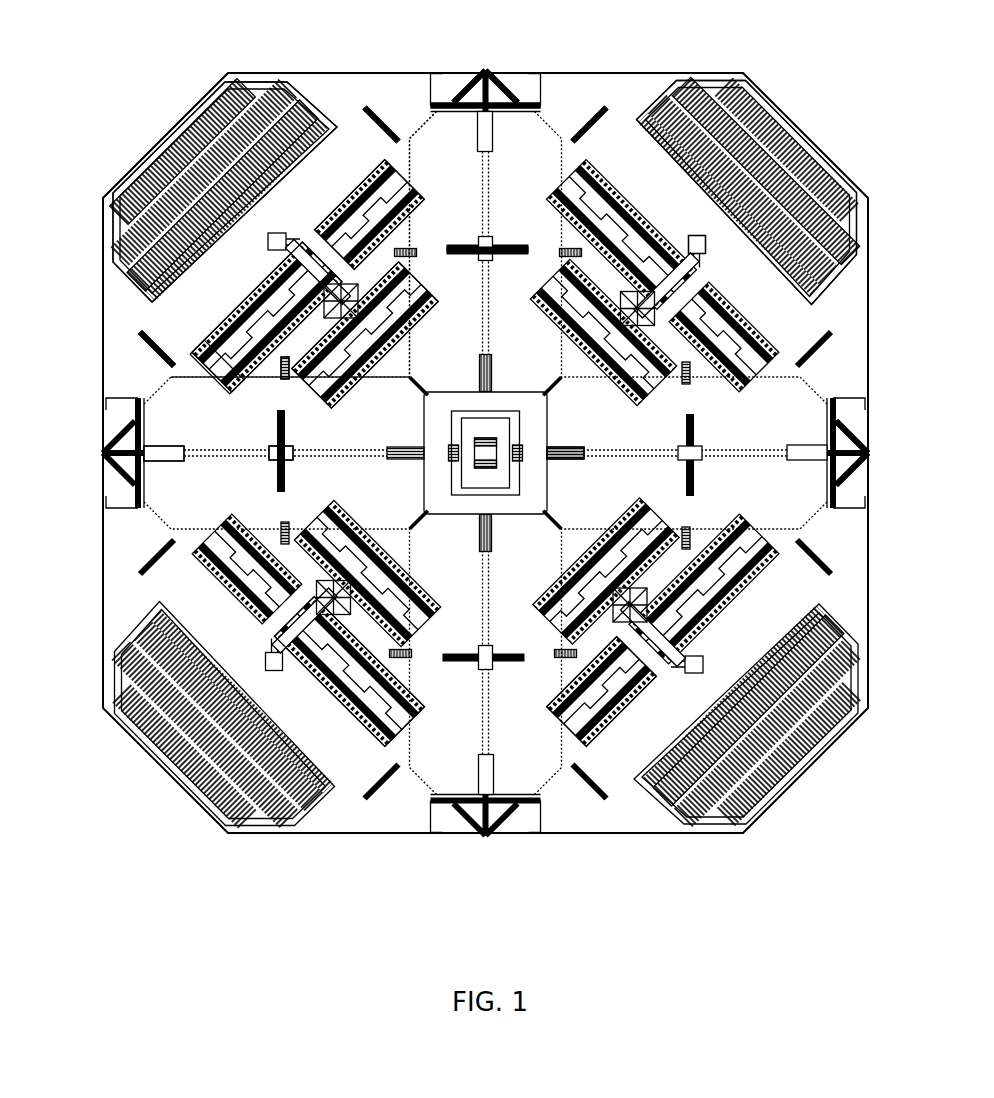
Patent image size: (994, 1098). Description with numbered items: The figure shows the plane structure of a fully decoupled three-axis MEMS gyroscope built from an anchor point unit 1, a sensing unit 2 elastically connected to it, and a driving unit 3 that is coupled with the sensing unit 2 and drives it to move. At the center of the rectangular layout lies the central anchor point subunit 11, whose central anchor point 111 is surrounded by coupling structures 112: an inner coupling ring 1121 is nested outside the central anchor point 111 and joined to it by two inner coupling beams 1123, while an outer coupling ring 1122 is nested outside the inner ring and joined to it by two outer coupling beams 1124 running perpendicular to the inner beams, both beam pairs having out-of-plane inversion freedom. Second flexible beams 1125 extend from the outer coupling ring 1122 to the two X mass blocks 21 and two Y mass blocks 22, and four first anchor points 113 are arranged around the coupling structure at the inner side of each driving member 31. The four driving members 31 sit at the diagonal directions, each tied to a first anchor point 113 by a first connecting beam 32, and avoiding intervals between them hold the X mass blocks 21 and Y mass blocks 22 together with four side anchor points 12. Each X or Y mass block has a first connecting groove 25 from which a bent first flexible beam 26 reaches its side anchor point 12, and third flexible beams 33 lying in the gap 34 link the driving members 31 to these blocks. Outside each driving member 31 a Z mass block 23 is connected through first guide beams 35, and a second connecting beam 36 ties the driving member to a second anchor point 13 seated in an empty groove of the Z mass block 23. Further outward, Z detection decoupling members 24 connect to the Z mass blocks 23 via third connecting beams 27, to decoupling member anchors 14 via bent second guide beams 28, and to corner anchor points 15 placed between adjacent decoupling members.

The anchor point unit 1 is at (858, 490).
The sensing unit 2 is at (230, 73).
The driving unit 3 is at (270, 285).
The central anchor point subunit 11 is at (440, 480).
The central anchor point 111 is at (477, 470).
The coupling structure 112 is at (478, 505).
The inner coupling ring 1121 is at (485, 480).
The outer coupling ring 1122 is at (513, 455).
The inner coupling beam 1123 is at (560, 705).
The outer coupling beam 1124 is at (573, 458).
The second flexible beam 1125 is at (780, 790).
The first anchor point 113 is at (330, 697).
The side anchor point 12 is at (705, 192).
The second anchor point 13 is at (697, 247).
The decoupling member anchor 14 is at (640, 88).
The corner anchor point 15 is at (530, 78).
The X mass block 21 is at (175, 470).
The Y mass block 22 is at (437, 133).
The Z mass block 23 is at (385, 105).
The Z detection decoupling member 24 is at (105, 192).
The first connecting groove 25 is at (272, 460).
The first flexible beam 26 is at (275, 480).
The third connecting beam 27 is at (152, 250).
The second guide beam 28 is at (152, 290).
The driving member 31 is at (190, 357).
The first connecting beam 32 is at (315, 395).
The third flexible beam 33 is at (275, 378).
The gap 34 is at (272, 368).
The first guide beam 35 is at (140, 332).
The second connecting beam 36 is at (220, 303).